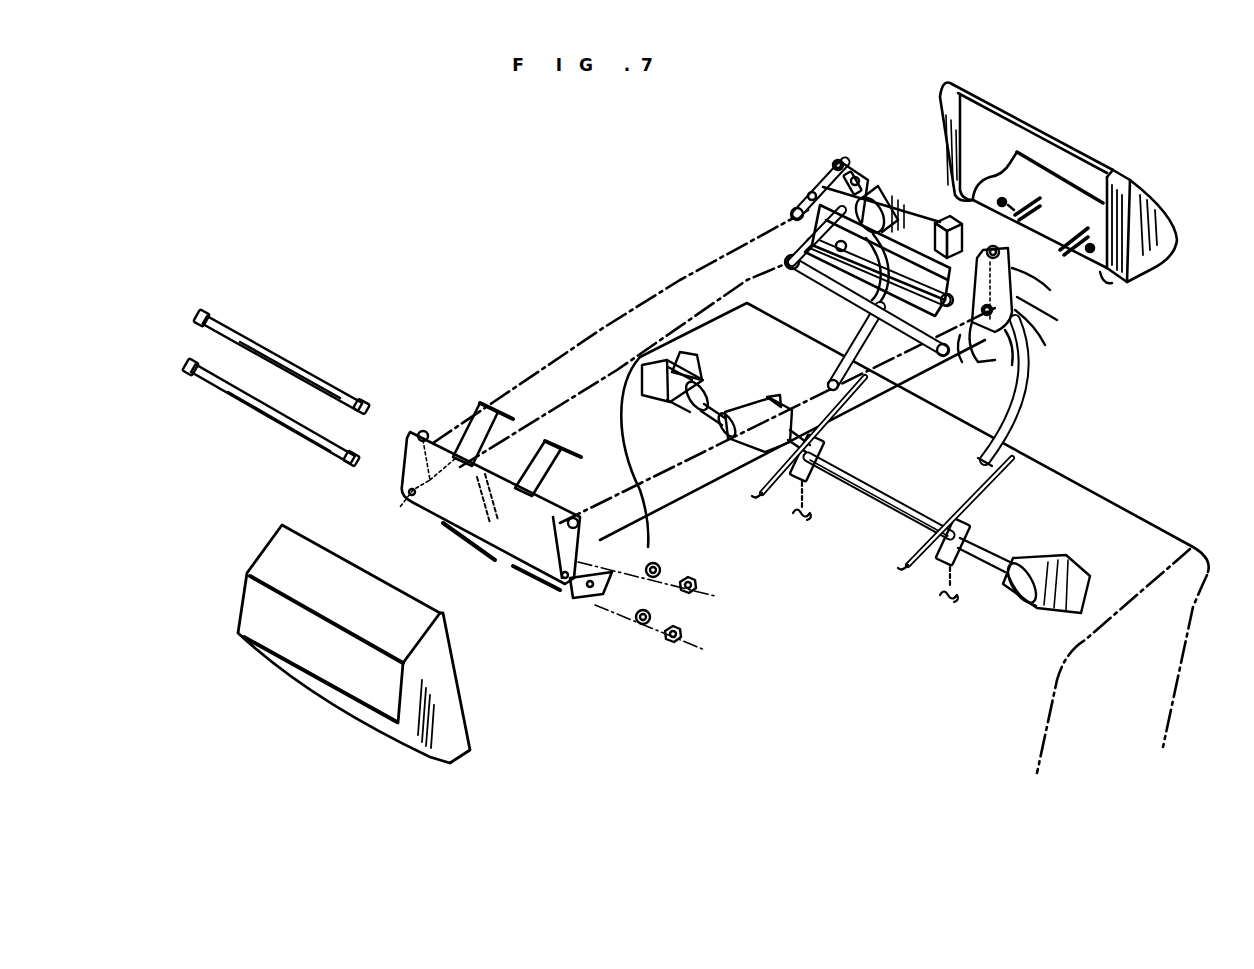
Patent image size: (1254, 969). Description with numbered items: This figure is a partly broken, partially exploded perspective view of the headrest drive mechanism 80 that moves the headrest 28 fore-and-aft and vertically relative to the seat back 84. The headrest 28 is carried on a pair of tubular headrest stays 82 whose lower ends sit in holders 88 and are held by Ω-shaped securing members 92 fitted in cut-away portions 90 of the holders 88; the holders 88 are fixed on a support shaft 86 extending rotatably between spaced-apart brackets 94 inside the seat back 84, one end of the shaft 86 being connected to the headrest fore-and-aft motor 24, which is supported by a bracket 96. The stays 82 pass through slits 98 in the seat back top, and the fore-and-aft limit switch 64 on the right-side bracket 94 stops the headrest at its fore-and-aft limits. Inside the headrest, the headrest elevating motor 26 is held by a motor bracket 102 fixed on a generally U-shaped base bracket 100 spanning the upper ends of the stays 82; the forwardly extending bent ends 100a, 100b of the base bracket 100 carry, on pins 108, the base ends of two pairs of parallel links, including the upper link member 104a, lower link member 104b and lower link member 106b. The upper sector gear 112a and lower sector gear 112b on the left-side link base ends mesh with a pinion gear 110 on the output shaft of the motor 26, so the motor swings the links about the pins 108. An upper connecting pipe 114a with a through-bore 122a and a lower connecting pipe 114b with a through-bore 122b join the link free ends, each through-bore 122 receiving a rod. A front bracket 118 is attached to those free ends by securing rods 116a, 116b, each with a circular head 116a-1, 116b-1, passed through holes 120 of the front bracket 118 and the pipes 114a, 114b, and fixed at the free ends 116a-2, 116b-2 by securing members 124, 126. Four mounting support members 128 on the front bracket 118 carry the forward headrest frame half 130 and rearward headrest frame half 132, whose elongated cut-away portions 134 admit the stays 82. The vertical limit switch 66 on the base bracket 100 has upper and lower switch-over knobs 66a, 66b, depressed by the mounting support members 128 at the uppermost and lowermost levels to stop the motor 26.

The headrest fore-and-aft motor 24 is at (678, 405).
The headrest elevating motor 26 is at (881, 200).
The headrest body 28 is at (793, 150).
The fore-and-aft limit switch 64 is at (1036, 606).
The vertical limit switch 66 is at (988, 252).
The upper switch-over knob 66a is at (965, 250).
The lower switch-over knob 66b is at (1018, 302).
The headrest drive mechanism 80 is at (611, 198).
The headrest stays 82 is at (853, 340).
The seat back 84 is at (1170, 650).
The support shaft 86 is at (888, 495).
The holders 88 is at (825, 448).
The cut-away portions 90 is at (975, 596).
The Ω-shaped securing members 92 is at (802, 522).
The brackets 94 is at (756, 405).
The bracket 96 is at (690, 355).
The slits 98 is at (867, 388).
The base bracket 100 is at (933, 207).
The forwardly extending bent end 100a is at (830, 158).
The forwardly extending bent end 100b is at (1020, 278).
The motor bracket 102 is at (898, 208).
The upper link member 104a is at (818, 185).
The lower link member 104b is at (790, 258).
The lower link member 106b is at (1025, 323).
The pins 108 is at (836, 158).
The pinion gear 110 is at (858, 185).
The upper sector gear 112a is at (856, 170).
The lower sector gear 112b is at (808, 196).
The upper connecting pipe 114a is at (902, 336).
The lower connecting pipe 114b is at (806, 278).
The securing rod 116a is at (255, 338).
The circular head 116a-1 is at (204, 310).
The free end 116a-2 is at (366, 400).
The securing rod 116b is at (222, 388).
The circular head 116b-1 is at (184, 367).
The free end 116b-2 is at (347, 466).
The front bracket 118 is at (446, 512).
The holes 120 is at (426, 430).
The ring 122 is at (792, 212).
The through-bore 122a is at (989, 335).
The through-bore 122b is at (968, 342).
The securing member 124 is at (661, 560).
The securing member 126 is at (699, 580).
The mounting support members 128 is at (482, 400).
The forward headrest frame half 130 is at (455, 678).
The rearward headrest frame half 132 is at (1178, 238).
The elongated cut-away portions 134 is at (940, 187).